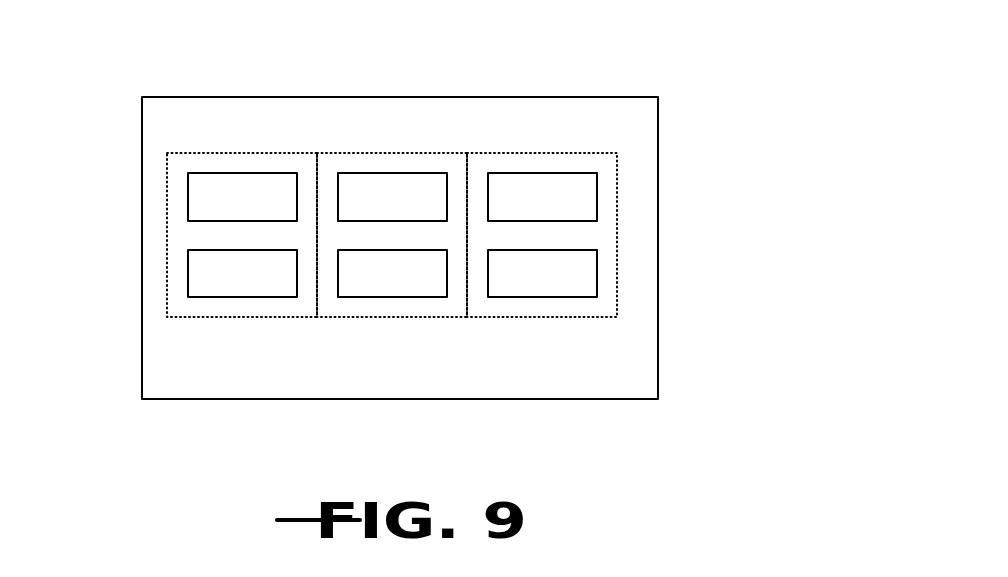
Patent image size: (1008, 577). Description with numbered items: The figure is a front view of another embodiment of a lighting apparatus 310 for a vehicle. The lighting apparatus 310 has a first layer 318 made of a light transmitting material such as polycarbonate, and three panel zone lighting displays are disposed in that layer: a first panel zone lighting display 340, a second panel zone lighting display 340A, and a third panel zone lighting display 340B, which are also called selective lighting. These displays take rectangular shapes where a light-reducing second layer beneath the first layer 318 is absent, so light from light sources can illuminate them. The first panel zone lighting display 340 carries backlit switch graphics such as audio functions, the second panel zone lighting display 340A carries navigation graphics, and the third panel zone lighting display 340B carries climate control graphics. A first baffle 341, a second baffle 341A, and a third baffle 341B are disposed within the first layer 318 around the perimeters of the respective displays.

The lighting apparatus 310 is at (553, 58).
The first layer 318 is at (637, 120).
The first panel zone lighting display 340 is at (176, 308).
The second panel zone lighting display 340A is at (353, 307).
The third panel zone lighting display 340B is at (537, 308).
The first baffle 341 is at (192, 320).
The second baffle 341A is at (395, 320).
The third baffle 341B is at (565, 320).